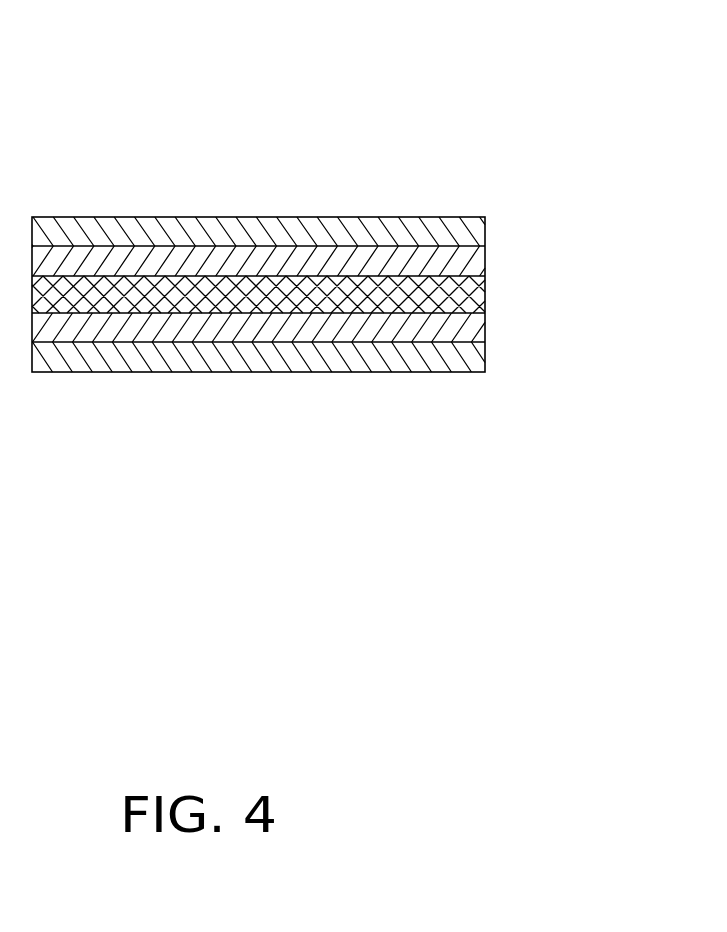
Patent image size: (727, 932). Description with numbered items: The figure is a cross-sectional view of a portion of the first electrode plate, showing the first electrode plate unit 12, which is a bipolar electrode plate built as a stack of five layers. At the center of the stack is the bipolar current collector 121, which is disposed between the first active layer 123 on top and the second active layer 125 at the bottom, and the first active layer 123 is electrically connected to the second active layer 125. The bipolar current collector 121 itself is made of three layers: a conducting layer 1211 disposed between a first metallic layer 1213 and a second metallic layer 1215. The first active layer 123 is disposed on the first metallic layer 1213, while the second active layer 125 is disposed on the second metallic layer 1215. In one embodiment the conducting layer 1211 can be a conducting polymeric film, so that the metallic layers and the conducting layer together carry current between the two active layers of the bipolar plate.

The first electrode plate unit 12 is at (190, 50).
The first active layer 123 is at (463, 230).
The bipolar current collector 121 is at (350, 297).
The first metallic layer 1213 is at (463, 262).
The conducting layer 1211 is at (466, 292).
The second metallic layer 1215 is at (471, 329).
The second active layer 125 is at (472, 358).